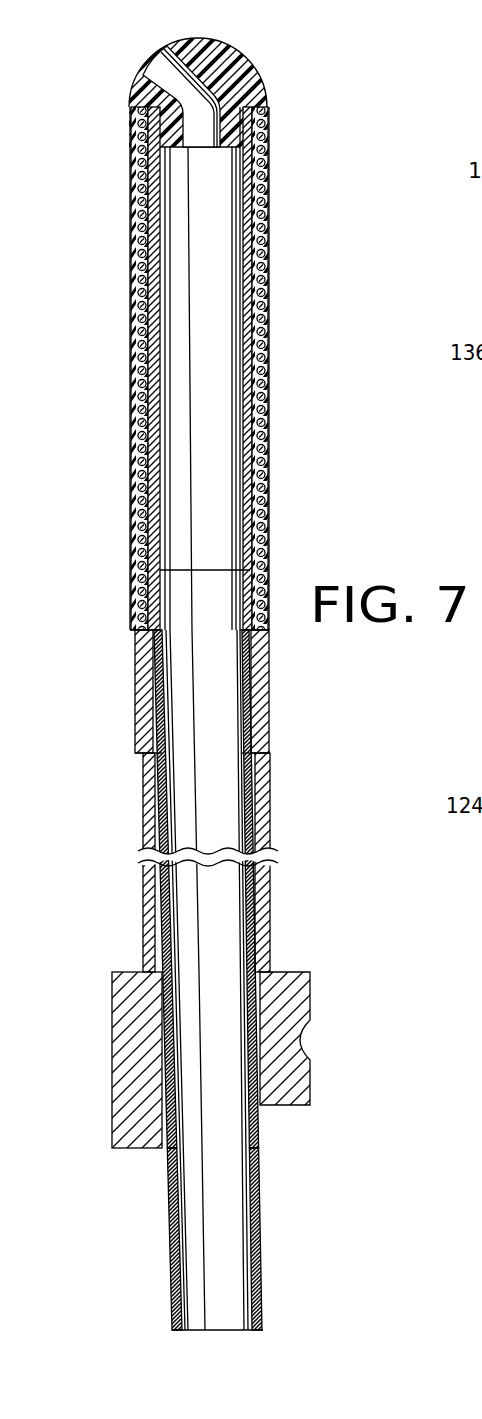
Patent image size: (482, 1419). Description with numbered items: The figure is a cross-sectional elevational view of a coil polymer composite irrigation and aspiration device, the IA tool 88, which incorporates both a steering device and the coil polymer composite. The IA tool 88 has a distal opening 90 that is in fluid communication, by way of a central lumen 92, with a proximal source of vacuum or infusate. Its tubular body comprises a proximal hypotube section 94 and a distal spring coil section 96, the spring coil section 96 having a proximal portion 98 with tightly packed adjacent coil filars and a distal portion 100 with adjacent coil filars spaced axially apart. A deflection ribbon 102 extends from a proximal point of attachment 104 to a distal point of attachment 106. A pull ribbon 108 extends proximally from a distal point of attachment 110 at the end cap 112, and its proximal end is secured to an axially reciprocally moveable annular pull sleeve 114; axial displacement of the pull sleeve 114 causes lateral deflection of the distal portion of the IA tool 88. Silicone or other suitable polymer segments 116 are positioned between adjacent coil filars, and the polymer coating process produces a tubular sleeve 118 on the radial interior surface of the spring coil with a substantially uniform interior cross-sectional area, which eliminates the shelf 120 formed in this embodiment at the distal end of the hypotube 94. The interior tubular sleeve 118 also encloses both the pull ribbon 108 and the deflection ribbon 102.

The IA tool 88 is at (130, 455).
The distal opening 90 is at (148, 72).
The central lumen 92 is at (220, 790).
The proximal hypotube section 94 is at (258, 1242).
The distal spring coil section 96 is at (278, 532).
The proximal portion 98 is at (262, 920).
The distal portion 100 is at (262, 333).
The deflection ribbon 102 is at (262, 262).
The proximal point of attachment 104 is at (263, 665).
The distal point of attachment 106 is at (262, 136).
The pull ribbon 108 is at (148, 283).
The distal point of attachment 110 is at (133, 130).
The end cap 112 is at (232, 73).
The pull sleeve 114 is at (112, 988).
The polymer segments 116 is at (138, 343).
The tubular sleeve 118 is at (150, 204).
The shelf 120 is at (160, 570).